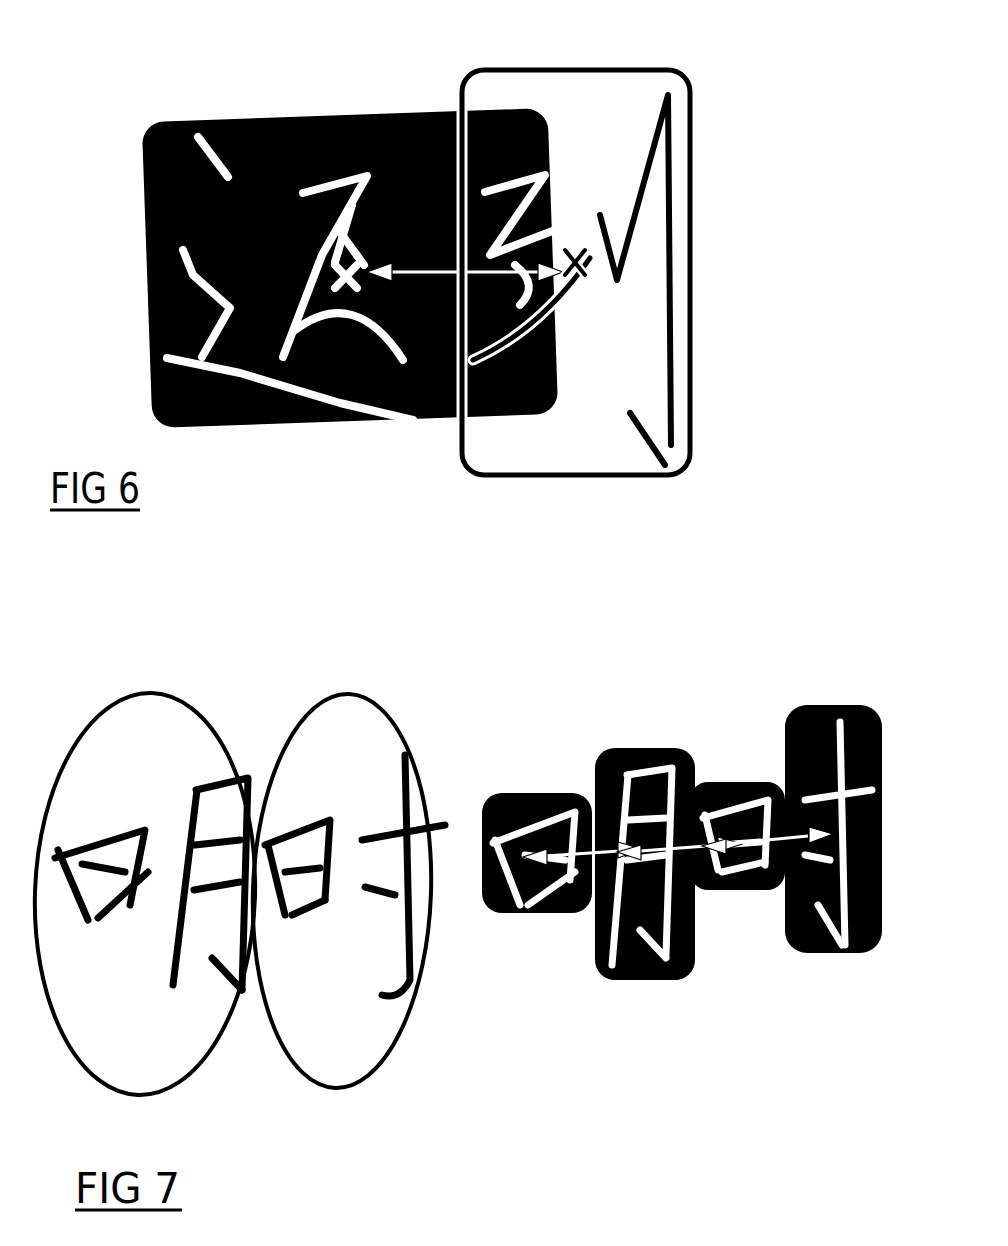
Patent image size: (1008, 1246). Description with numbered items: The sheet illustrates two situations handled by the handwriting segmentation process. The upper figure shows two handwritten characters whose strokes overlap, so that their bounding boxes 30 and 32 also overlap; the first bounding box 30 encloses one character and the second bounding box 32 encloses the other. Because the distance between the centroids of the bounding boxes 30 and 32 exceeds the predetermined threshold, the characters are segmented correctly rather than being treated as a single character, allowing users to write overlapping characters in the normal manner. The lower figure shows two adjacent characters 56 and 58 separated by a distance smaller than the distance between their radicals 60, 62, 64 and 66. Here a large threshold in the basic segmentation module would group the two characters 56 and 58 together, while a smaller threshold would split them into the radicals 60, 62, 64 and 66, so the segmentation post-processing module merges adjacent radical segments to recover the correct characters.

In FIG. 6, the bounding box 30 is at (155, 122).
In FIG. 6, the bounding box 32 is at (593, 68).
In FIG. 7, the character 56 is at (180, 1082).
In FIG. 7, the character 58 is at (367, 1075).
In FIG. 7, the radical 60 is at (545, 915).
In FIG. 7, the radical 62 is at (652, 982).
In FIG. 7, the radical 64 is at (742, 890).
In FIG. 7, the radical 66 is at (833, 955).